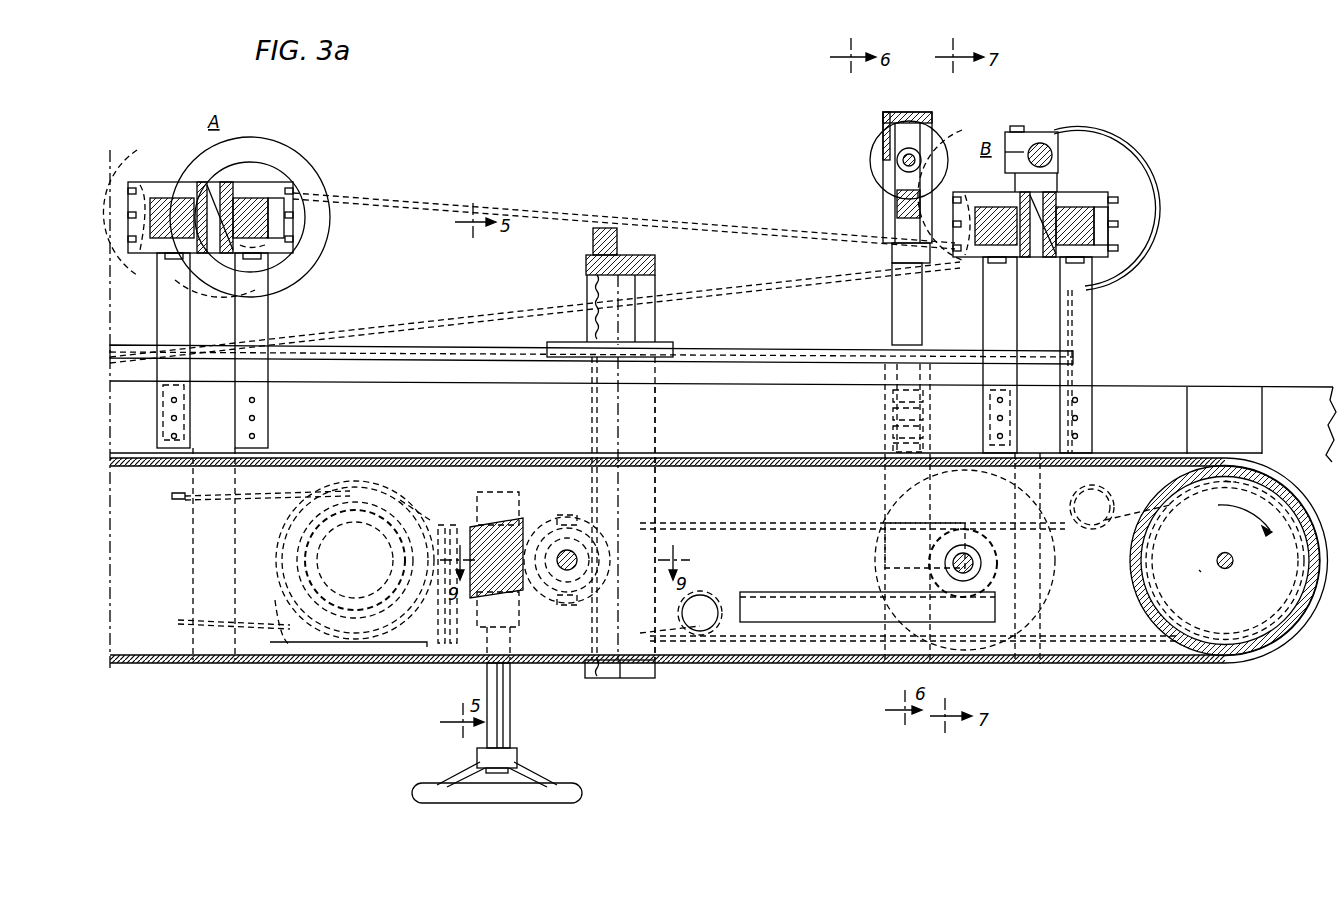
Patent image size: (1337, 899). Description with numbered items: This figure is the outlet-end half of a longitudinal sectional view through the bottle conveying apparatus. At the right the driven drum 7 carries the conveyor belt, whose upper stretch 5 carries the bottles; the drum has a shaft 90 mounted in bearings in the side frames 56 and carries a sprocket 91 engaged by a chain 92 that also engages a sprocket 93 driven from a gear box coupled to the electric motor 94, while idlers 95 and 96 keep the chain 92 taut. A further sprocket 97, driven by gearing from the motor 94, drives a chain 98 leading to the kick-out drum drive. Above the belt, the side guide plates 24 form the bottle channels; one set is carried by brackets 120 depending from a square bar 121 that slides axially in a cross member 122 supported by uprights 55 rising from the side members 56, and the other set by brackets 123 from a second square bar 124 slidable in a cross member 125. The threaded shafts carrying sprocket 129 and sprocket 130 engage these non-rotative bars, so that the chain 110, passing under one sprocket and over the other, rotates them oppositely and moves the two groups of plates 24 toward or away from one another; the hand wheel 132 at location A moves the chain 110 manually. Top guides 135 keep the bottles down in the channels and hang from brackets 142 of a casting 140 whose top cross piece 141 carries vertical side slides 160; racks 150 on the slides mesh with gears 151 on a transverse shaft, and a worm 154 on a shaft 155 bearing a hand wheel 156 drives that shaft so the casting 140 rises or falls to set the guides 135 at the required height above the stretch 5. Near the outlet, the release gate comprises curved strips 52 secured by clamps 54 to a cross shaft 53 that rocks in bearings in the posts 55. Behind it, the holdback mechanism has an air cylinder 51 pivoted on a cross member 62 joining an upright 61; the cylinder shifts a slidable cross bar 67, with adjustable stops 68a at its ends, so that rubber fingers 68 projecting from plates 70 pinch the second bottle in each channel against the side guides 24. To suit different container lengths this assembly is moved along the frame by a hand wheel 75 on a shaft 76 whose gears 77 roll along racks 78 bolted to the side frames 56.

The upper stretch 5 is at (762, 456).
The driven drum 7 is at (1138, 590).
The side guide plates 24 is at (441, 414).
The air cylinder 51 is at (895, 160).
The curved strips 52 is at (1135, 250).
The cross shaft 53 is at (1052, 156).
The clamps 54 is at (1005, 140).
The uprights 55 is at (218, 364).
The side frames 56 is at (1207, 665).
The upright 61 is at (892, 250).
The cross member 62 is at (912, 112).
The slidable cross bar 67 is at (897, 213).
The rubber fingers 68 is at (890, 424).
The adjustable stops 68a is at (870, 175).
The plates 70 is at (900, 326).
The hand wheel 75 is at (1040, 665).
The shaft 76 is at (965, 553).
The gears 77 is at (1000, 569).
The racks 78 is at (812, 595).
The shaft 90 is at (1233, 562).
The sprocket 91 is at (1145, 560).
The chain 92 is at (754, 525).
The sprocket 93 is at (405, 512).
The electric motor 94 is at (390, 650).
The idler 95 is at (715, 598).
The idler 96 is at (1108, 498).
The sprocket 97 is at (383, 500).
The chain 98 is at (178, 500).
The chain 110 is at (405, 203).
The brackets 120 is at (160, 305).
The square bar 121 is at (165, 185).
The cross member 122 is at (197, 185).
The brackets 123 is at (270, 312).
The square bar 124 is at (290, 228).
The cross member 125 is at (228, 258).
The sprocket 129 is at (137, 165).
The sprocket 130 is at (268, 158).
The hand wheel 132 is at (300, 180).
The top guides 135 is at (383, 338).
The casting 140 is at (656, 262).
The top cross piece 141 is at (610, 232).
The brackets 142 is at (640, 322).
The racks 150 is at (587, 292).
The gears 151 is at (605, 535).
The worm 154 is at (522, 527).
The shaft 155 is at (510, 710).
The hand wheel 156 is at (560, 785).
The side slides 160 is at (658, 426).